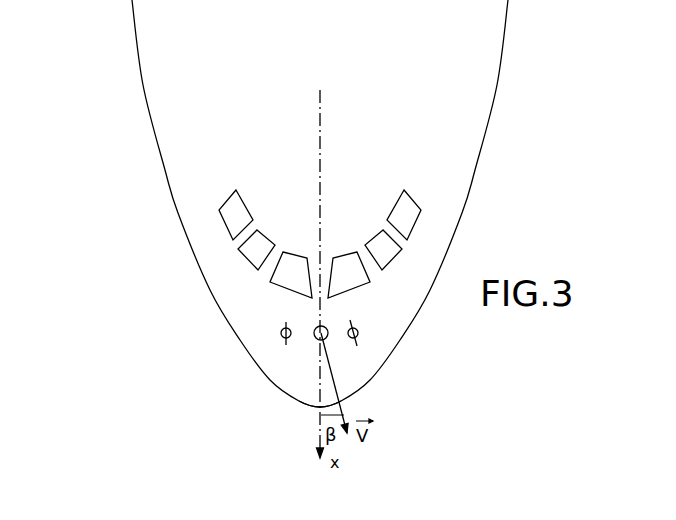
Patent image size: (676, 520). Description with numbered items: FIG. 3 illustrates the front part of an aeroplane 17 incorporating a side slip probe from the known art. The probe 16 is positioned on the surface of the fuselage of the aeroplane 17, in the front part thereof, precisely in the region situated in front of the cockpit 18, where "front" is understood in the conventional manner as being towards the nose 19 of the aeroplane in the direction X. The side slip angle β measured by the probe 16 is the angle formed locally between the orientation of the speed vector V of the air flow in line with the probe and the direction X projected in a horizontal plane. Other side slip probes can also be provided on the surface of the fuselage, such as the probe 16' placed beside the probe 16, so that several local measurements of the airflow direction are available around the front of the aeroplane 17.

The side slip probe 16 is at (361, 316).
The side slip probe 16' is at (397, 345).
The aeroplane 17 is at (157, 213).
The cockpit 18 is at (417, 187).
The nose 19 is at (300, 405).